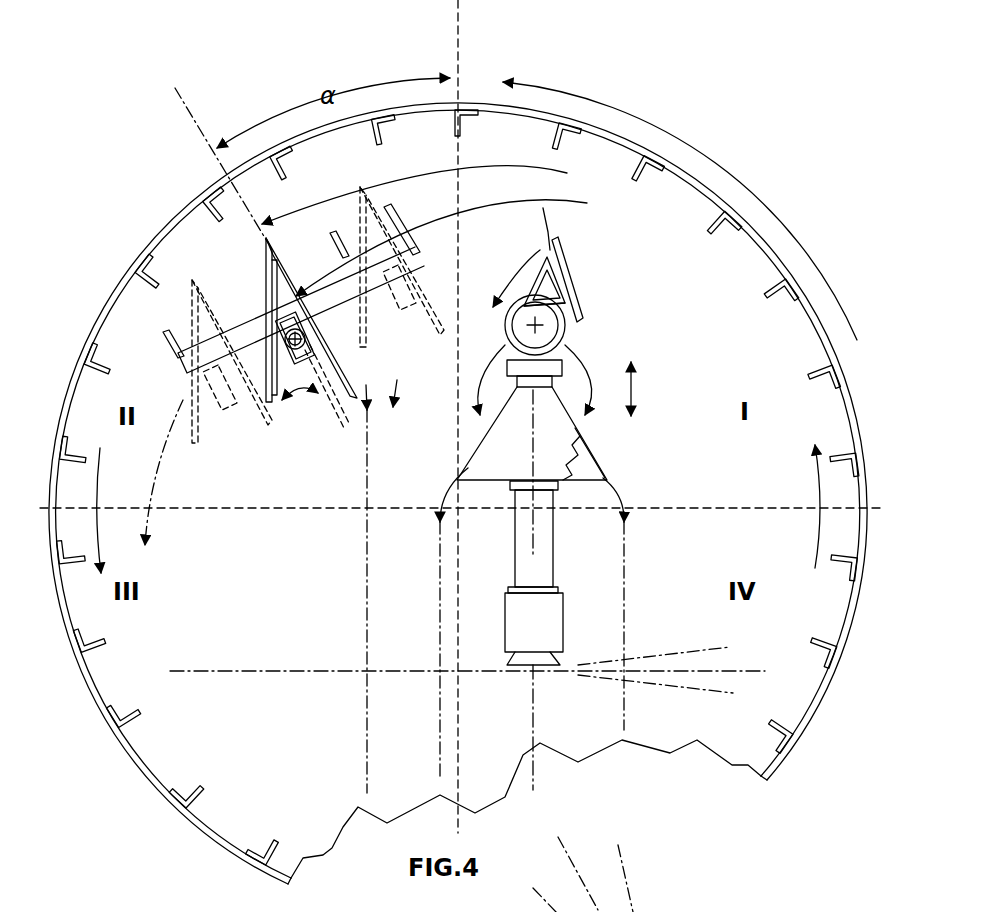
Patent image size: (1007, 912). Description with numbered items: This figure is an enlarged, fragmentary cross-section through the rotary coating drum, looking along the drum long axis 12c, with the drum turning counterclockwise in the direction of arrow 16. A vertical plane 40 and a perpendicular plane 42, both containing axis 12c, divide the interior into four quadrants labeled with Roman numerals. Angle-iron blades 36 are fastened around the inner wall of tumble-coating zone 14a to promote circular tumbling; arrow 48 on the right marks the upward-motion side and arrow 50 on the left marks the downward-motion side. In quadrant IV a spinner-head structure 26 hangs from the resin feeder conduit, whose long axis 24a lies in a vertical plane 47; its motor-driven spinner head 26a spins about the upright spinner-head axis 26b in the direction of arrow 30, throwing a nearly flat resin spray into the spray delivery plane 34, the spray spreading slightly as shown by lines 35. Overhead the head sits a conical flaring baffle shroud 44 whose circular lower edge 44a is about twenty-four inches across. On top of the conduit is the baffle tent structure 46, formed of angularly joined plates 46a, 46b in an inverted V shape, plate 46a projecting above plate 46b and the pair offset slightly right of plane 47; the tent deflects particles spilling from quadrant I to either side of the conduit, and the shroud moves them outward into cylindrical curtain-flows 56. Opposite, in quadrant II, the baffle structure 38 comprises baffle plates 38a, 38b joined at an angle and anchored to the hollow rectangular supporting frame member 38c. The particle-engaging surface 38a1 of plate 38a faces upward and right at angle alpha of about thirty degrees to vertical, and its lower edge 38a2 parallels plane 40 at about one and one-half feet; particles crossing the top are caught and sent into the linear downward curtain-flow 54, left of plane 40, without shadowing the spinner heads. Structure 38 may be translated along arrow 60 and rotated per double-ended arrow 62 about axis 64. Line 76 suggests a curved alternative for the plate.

The vertical plane 40 is at (463, 34).
The arrow indicating drum rotation direction 16 is at (641, 120).
The tumble-coating zone 14a is at (670, 195).
The angle-iron blades 36 is at (780, 278).
The plane intersecting vertical plane 42 is at (735, 505).
The spray delivery plane 34 is at (250, 665).
The spray spread lines 35 is at (660, 690).
The curved baffle plate outline 76 is at (672, 911).
The downward-motion side arrow 50 is at (100, 482).
The linear downward curtain-flow 54 is at (358, 590).
The upward-motion side arrow 48 is at (818, 532).
The baffle structure 38 is at (253, 242).
The baffle plate 38a is at (274, 243).
The particle-engaging baffle surface 38a1 is at (340, 195).
The lower edge of baffle plate 38a2 is at (275, 374).
The baffle plate 38b is at (262, 277).
The supporting frame member 38c is at (318, 366).
The arrow indicating translational adjustment 60 is at (262, 222).
The axis of rotational adjustment 64 is at (280, 335).
The double-ended curved arrow 62 is at (290, 410).
The spinner-head structure 26 is at (588, 586).
The long axis of feeder conduit 24a is at (506, 325).
The conical flaring baffle shroud 44 is at (590, 437).
The circular lower edge of shroud 44a is at (603, 445).
The spinner-head axis 26b is at (535, 437).
The drum long axis 12c is at (460, 513).
The arrow indicating spinner-head rotation 30 is at (548, 625).
The spinner head 26a is at (605, 634).
The cylindrical curtain-flow of particles 56 is at (628, 630).
The vertical plane containing conduit axis 47 is at (545, 228).
The baffle tent structure 46 is at (576, 265).
The tent baffle plate 46a is at (578, 313).
The tent baffle plate 46b is at (566, 330).